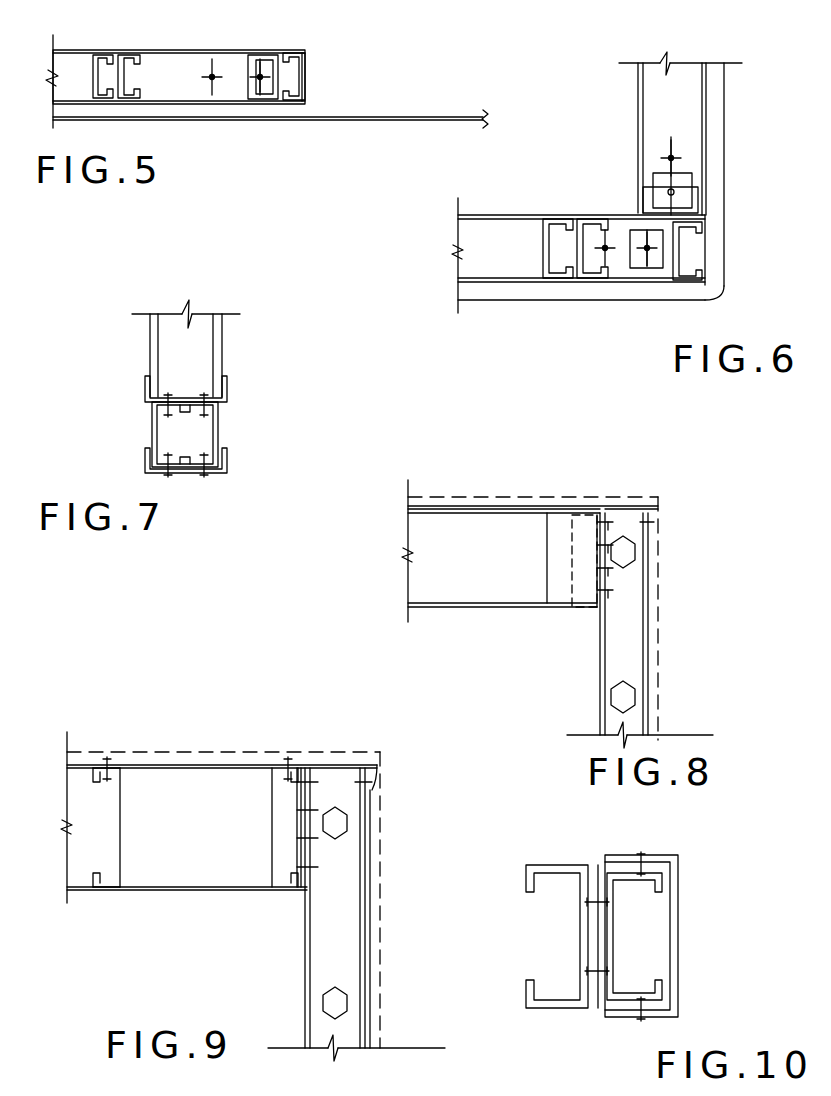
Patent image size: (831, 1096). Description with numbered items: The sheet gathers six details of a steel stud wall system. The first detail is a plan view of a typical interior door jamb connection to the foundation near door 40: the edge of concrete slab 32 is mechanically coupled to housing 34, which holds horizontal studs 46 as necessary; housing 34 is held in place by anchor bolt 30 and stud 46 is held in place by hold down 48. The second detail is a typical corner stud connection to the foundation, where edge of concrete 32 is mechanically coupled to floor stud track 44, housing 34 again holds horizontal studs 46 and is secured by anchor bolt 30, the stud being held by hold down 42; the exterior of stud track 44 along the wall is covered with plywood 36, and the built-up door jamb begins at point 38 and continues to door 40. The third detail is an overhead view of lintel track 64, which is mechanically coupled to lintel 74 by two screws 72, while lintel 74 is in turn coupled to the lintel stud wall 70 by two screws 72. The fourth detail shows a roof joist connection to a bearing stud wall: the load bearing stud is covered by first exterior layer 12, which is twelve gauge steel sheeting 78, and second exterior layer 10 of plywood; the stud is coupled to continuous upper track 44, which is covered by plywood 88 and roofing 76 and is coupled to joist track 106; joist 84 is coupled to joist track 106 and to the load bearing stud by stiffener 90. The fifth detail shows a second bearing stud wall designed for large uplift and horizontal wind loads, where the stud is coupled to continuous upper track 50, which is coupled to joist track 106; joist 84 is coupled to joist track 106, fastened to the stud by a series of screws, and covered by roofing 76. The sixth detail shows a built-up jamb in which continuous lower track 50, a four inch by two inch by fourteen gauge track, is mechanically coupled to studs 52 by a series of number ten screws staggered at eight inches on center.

In FIG. 8, the second exterior layer 10 is at (658, 668).
In FIG. 9, the second exterior layer 10 is at (380, 962).
In FIG. 8, the first exterior layer 12 is at (648, 720).
In FIG. 9, the first exterior layer 12 is at (365, 1035).
In FIG. 5, the anchor bolt 30 is at (212, 77).
In FIG. 6, the anchor bolt 30 is at (671, 158).
In FIG. 5, the edge of concrete slab 32 is at (365, 117).
In FIG. 6, the edge of concrete slab 32 is at (725, 245).
In FIG. 5, the housing 34 is at (305, 52).
In FIG. 6, the housing 34 is at (716, 300).
In FIG. 6, the plywood 36 is at (596, 300).
In FIG. 6, the point 38 is at (545, 282).
In FIG. 5, the door 40 is at (385, 76).
In FIG. 6, the door 40 is at (498, 264).
In FIG. 6, the hold down 42 is at (630, 233).
In FIG. 6, the floor stud track 44 is at (706, 102).
In FIG. 8, the floor stud track 44 is at (660, 510).
In FIG. 5, the horizontal stud 46 is at (93, 70).
In FIG. 5, the hold down 48 is at (250, 58).
In FIG. 9, the continuous track 50 is at (377, 778).
In FIG. 10, the continuous track 50 is at (678, 855).
In FIG. 10, the stud 52 is at (607, 957).
In FIG. 7, the lintel track 64 is at (227, 473).
In FIG. 7, the stud wall 70 is at (222, 346).
In FIG. 7, the screws 72 is at (168, 390).
In FIG. 9, the screws 72 is at (340, 768).
In FIG. 7, the lintel 74 is at (145, 432).
In FIG. 8, the roofing 76 is at (533, 496).
In FIG. 9, the roofing 76 is at (222, 752).
In FIG. 9, the steel sheeting 78 is at (380, 895).
In FIG. 8, the joist 84 is at (497, 607).
In FIG. 9, the joist 84 is at (275, 768).
In FIG. 8, the plywood 88 is at (505, 506).
In FIG. 8, the stiffener 90 is at (547, 578).
In FIG. 8, the joist track 106 is at (572, 512).
In FIG. 9, the joist track 106 is at (228, 890).